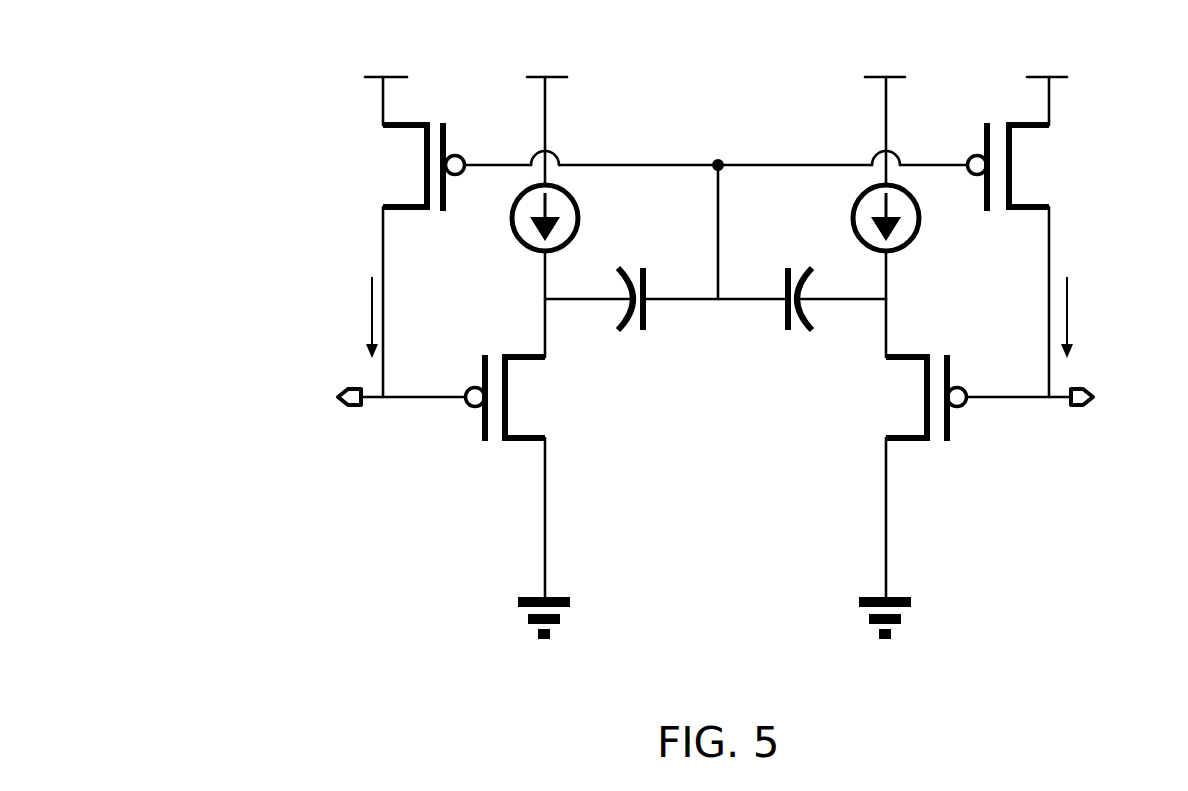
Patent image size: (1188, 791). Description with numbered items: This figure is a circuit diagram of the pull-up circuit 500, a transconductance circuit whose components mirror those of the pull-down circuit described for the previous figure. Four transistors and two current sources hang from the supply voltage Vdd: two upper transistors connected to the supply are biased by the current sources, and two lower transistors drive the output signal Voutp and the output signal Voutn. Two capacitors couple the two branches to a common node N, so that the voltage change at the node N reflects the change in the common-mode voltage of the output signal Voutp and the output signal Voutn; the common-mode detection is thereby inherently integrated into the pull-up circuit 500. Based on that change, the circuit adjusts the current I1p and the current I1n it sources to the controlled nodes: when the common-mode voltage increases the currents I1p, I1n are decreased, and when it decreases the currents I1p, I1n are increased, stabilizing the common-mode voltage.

The pull-up circuit 500 is at (213, 88).
The supply voltage Vdd is at (718, 110).
The node N is at (721, 159).
The current I1p is at (351, 317).
The current I1n is at (1088, 317).
The output signal Voutp is at (363, 395).
The output signal Voutn is at (1069, 395).